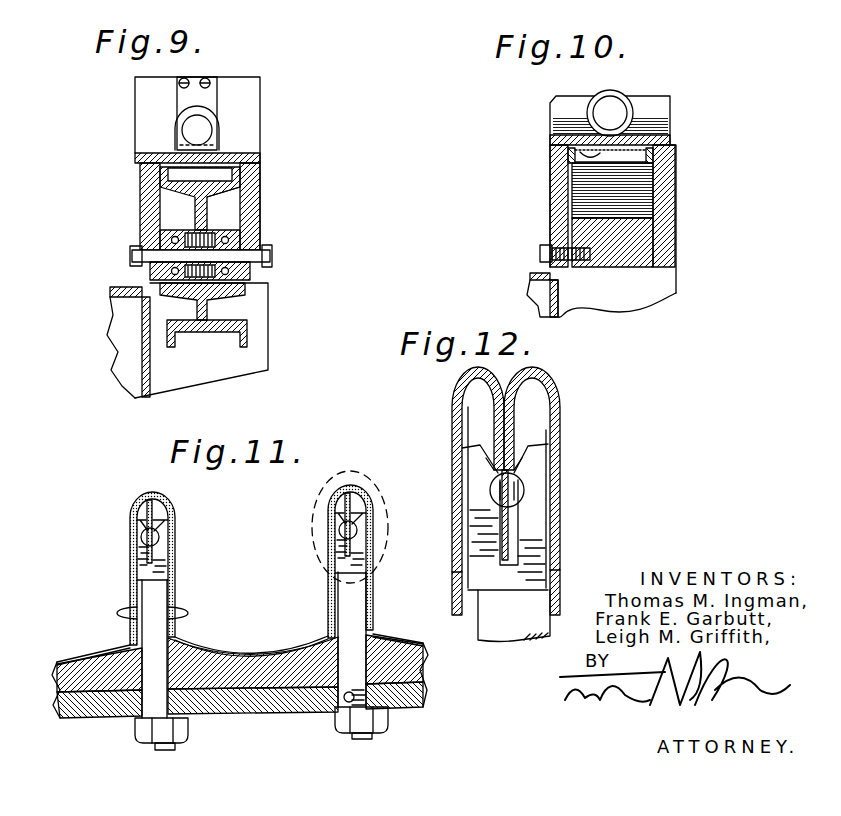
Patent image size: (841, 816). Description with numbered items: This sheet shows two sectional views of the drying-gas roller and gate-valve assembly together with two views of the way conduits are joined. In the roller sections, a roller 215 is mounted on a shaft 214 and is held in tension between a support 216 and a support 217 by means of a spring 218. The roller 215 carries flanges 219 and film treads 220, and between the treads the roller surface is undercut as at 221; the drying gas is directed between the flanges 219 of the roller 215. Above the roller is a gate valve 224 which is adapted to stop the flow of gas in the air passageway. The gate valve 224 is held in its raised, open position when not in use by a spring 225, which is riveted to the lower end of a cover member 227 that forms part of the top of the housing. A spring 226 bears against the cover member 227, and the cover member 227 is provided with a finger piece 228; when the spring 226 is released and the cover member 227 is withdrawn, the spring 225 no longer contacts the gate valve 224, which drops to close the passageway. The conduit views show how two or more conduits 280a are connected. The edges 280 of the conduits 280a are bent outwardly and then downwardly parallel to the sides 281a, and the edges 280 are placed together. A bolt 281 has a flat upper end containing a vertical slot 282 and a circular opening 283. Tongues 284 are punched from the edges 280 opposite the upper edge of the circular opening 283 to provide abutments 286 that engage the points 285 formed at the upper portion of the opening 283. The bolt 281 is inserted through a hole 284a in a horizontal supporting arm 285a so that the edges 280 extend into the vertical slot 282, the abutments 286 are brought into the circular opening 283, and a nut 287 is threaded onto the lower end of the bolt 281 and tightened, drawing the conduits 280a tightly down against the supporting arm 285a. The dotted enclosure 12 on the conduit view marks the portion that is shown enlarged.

In FIG. 11, the dotted enclosure 12 is at (356, 472).
In FIG. 9, the shaft 214 is at (235, 257).
In FIG. 9, the roller 215 is at (141, 198).
In FIG. 9, the support 216 is at (141, 218).
In FIG. 10, the support 216 is at (560, 194).
In FIG. 9, the support 217 is at (250, 190).
In FIG. 10, the support 217 is at (664, 178).
In FIG. 9, the spring 218 is at (150, 266).
In FIG. 9, the flange 219 is at (160, 175).
In FIG. 9, the film tread 220 is at (228, 190).
In FIG. 9, the undercut 221 is at (183, 192).
In FIG. 10, the gate valve 224 is at (641, 139).
In FIG. 10, the spring 225 is at (563, 157).
In FIG. 9, the spring 226 is at (210, 97).
In FIG. 9, the cover member 227 is at (150, 157).
In FIG. 9, the finger piece 228 is at (176, 127).
In FIG. 10, the finger piece 228 is at (621, 96).
In FIG. 12, the edge 280 is at (497, 430).
In FIG. 11, the edge 280 is at (348, 509).
In FIG. 12, the conduit 280a is at (456, 585).
In FIG. 11, the conduit 280a is at (180, 612).
In FIG. 12, the bolt 281 is at (519, 622).
In FIG. 11, the bolt 281 is at (357, 626).
In FIG. 12, the side 281a is at (458, 528).
In FIG. 12, the vertical slot 282 is at (519, 555).
In FIG. 12, the circular opening 283 is at (525, 483).
In FIG. 12, the tongue 284 is at (491, 492).
In FIG. 11, the hole 284a is at (347, 712).
In FIG. 12, the point 285 is at (493, 478).
In FIG. 11, the horizontal supporting arm 285a is at (423, 706).
In FIG. 12, the abutment 286 is at (521, 470).
In FIG. 11, the nut 287 is at (378, 734).